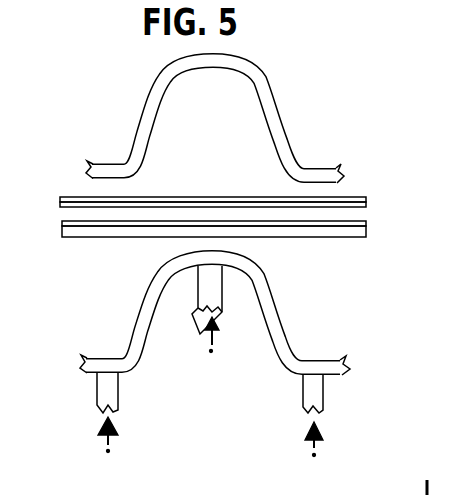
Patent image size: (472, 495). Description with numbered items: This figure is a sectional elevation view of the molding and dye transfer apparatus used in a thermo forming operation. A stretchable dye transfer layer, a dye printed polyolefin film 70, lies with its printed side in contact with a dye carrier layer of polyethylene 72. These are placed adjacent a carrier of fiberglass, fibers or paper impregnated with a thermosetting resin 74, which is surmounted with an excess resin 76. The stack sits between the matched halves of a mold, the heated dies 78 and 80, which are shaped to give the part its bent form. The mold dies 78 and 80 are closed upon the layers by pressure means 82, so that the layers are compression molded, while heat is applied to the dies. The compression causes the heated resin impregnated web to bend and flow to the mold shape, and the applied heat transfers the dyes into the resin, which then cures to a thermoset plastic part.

The dye printed polyolefin film 70 is at (353, 198).
The dye carrier layer of polyethylene 72 is at (367, 208).
The carrier impregnated with a thermosetting resin 74 is at (76, 238).
The excess resin 76 is at (63, 223).
The heated die 78 is at (267, 325).
The heated die 80 is at (262, 95).
The pressure means 82 is at (338, 400).